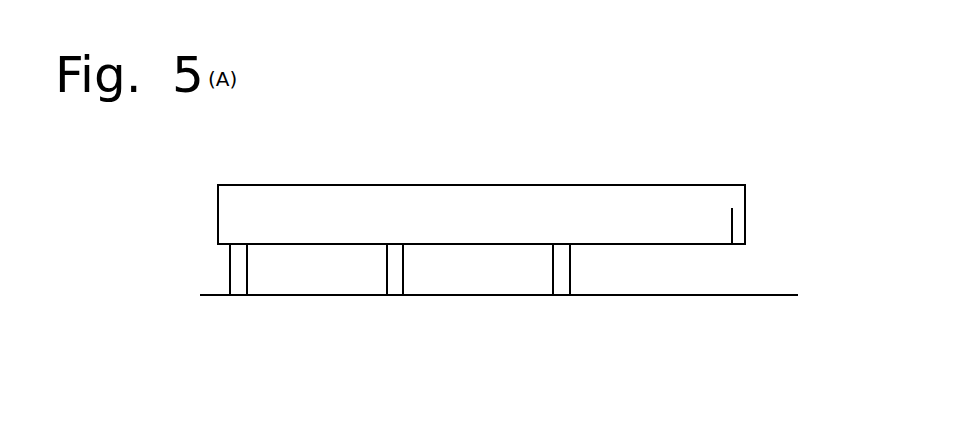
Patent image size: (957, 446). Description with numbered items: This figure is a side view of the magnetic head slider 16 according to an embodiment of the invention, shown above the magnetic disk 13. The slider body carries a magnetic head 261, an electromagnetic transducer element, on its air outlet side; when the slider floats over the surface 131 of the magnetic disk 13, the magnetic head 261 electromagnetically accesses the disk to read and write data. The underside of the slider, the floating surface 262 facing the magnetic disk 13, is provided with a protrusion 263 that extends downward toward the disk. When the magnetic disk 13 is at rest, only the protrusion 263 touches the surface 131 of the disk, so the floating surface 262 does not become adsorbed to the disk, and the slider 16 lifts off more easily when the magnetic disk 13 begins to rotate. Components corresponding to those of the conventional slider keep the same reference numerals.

The magnetic disk 13 is at (212, 317).
The surface of the magnetic disk 131 is at (210, 293).
The magnetic head slider 16 is at (583, 152).
The magnetic head 261 is at (733, 228).
The floating surface 262 is at (680, 245).
The protrusion 263 is at (393, 265).